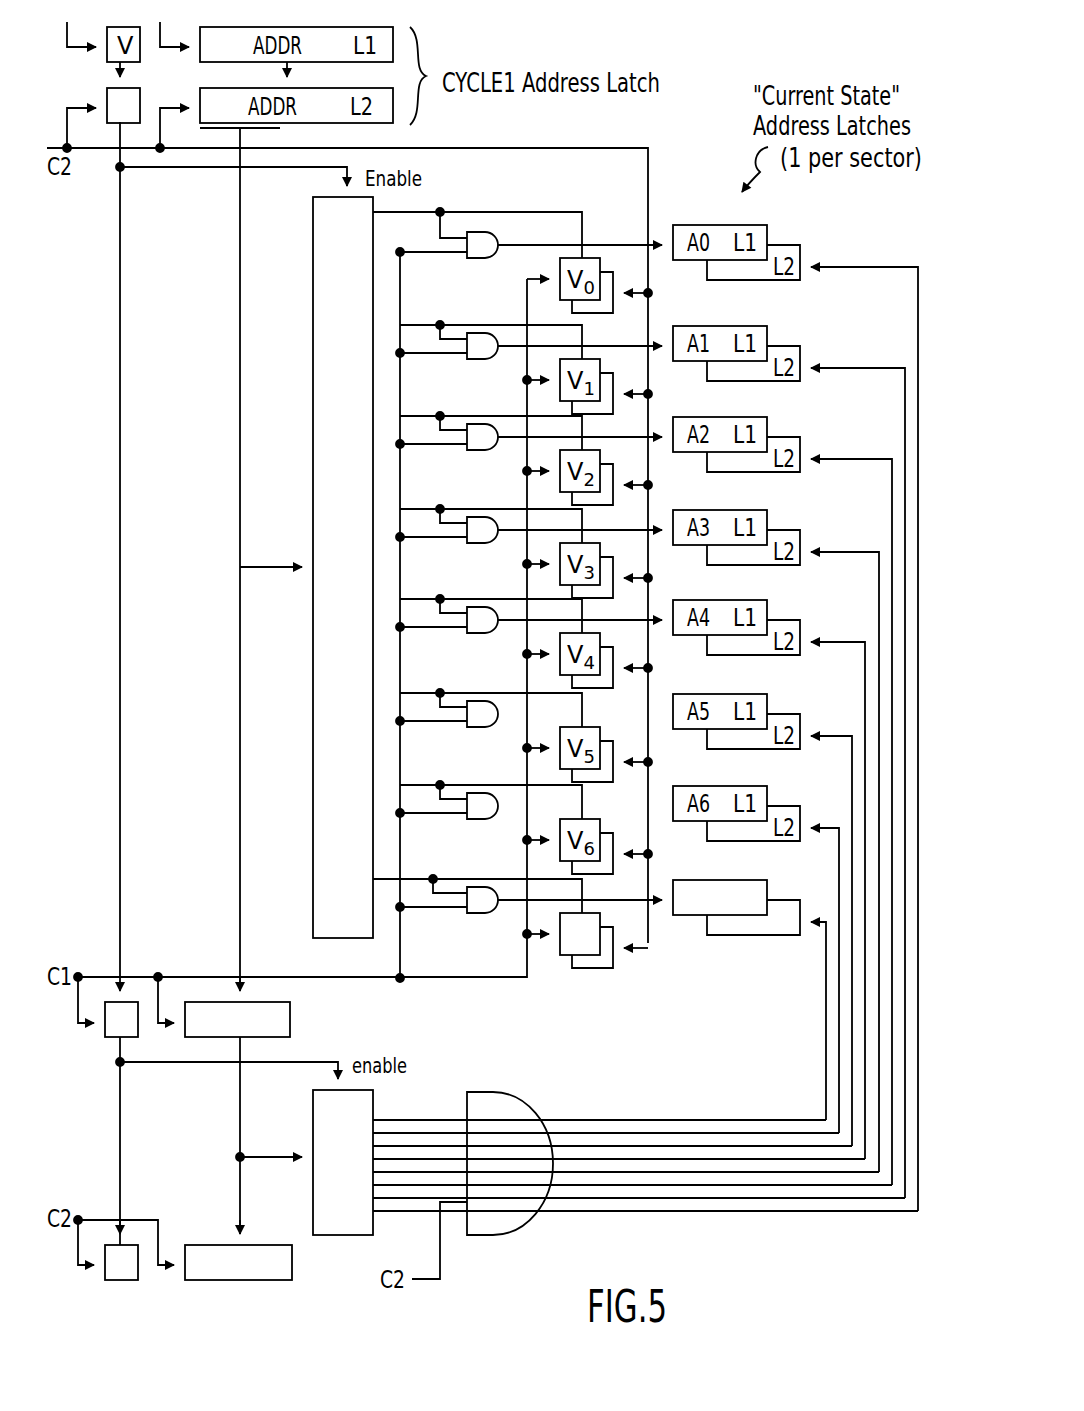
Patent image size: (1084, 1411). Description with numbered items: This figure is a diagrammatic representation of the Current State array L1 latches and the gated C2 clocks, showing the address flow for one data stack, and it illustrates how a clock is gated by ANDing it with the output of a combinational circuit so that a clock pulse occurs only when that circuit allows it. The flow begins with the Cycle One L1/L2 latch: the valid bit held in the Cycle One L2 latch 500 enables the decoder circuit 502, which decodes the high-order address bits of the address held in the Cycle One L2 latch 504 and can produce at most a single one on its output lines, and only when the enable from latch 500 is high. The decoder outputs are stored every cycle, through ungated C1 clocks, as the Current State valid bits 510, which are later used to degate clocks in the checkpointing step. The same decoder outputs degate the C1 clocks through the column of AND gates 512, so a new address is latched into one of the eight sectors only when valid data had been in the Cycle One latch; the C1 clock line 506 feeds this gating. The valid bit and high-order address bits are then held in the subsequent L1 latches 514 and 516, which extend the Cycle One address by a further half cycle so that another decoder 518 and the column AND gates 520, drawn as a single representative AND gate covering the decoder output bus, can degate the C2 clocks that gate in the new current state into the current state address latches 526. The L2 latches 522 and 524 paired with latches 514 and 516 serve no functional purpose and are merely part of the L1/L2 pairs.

The Cycle 1 L2 latch 500 is at (140, 98).
The decoder circuit 502 is at (313, 300).
The Cycle 1 L2 latch 504 is at (240, 232).
The C1 clock line 506 is at (135, 977).
The Current State valid bits 510 is at (563, 963).
The column of AND gates 512 is at (473, 913).
The L1 latch 514 is at (138, 1030).
The L1 latch 516 is at (290, 1028).
The decoder 518 is at (373, 1092).
The column AND gates 520 is at (523, 1098).
The L2 latch 522 is at (128, 1245).
The L2 latch 524 is at (210, 1245).
The current state address latch 526 is at (713, 937).